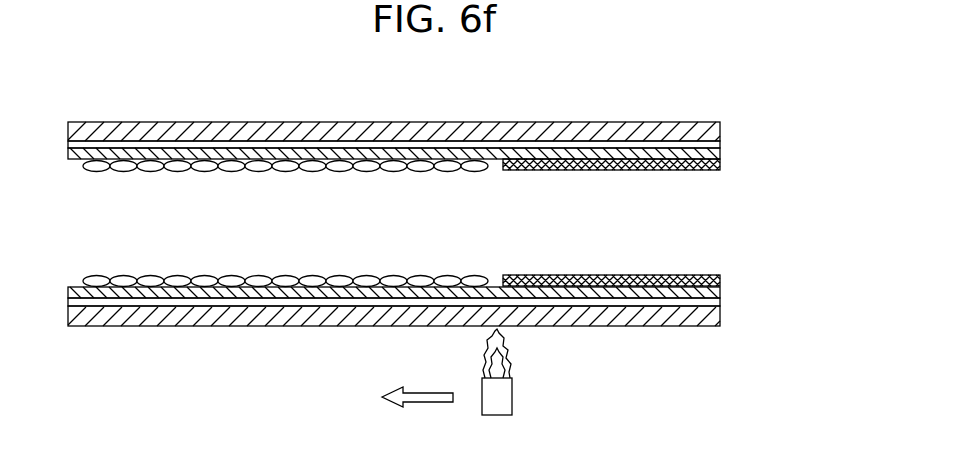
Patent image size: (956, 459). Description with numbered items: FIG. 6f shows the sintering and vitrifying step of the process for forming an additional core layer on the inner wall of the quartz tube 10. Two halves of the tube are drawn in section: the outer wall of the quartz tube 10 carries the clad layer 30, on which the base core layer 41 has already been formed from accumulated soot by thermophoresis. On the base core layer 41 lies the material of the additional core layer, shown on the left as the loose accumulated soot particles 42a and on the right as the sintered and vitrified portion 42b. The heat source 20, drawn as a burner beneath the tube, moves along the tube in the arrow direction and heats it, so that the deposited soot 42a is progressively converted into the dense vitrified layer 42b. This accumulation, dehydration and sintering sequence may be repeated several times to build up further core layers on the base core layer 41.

The quartz tube 10 is at (720, 131).
The clad layer 30 is at (720, 145).
The base core layer 41 is at (720, 153).
The expandable particles 42a is at (96, 169).
The expanded layer 42b is at (720, 165).
The heat source 20 is at (505, 392).